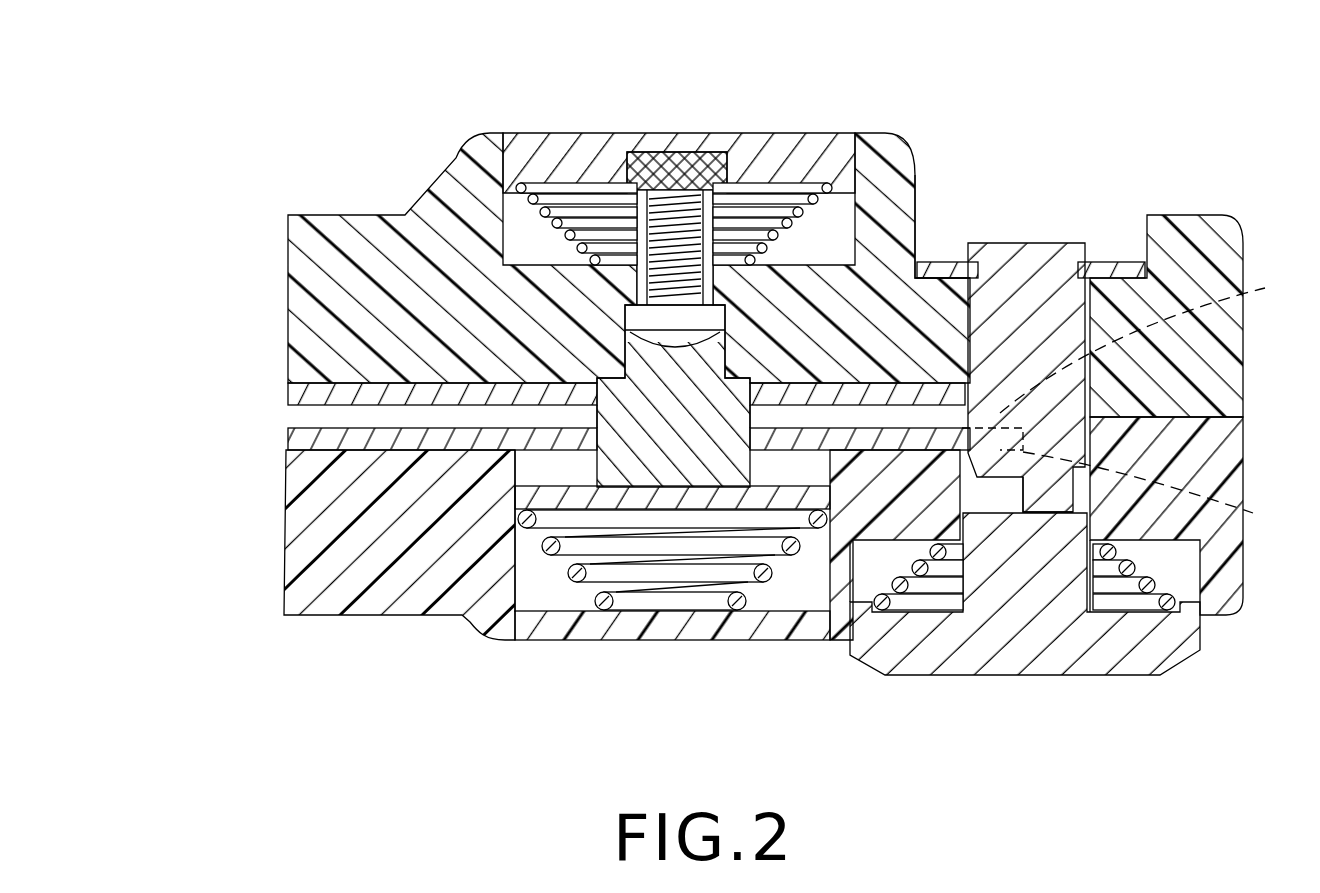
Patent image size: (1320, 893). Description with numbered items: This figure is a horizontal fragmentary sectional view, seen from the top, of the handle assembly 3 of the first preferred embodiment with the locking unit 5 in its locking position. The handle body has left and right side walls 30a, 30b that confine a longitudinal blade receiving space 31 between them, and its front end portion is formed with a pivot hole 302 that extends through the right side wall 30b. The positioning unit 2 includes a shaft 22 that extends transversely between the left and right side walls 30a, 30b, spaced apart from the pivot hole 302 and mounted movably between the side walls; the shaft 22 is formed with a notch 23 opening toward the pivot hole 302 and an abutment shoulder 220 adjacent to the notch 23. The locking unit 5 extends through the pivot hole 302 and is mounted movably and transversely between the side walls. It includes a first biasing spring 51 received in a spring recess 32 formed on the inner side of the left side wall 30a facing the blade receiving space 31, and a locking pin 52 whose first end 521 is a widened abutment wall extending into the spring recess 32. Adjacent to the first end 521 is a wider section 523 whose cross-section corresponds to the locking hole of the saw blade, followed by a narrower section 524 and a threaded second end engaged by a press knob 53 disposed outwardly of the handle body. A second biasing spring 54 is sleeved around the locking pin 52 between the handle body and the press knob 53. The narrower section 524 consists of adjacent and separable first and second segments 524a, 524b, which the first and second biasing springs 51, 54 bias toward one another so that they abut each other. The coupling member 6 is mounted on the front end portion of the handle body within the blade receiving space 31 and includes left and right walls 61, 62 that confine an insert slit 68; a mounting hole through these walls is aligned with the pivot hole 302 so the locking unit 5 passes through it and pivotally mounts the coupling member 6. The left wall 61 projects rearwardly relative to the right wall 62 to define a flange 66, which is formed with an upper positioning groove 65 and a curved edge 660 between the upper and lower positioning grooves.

The positioning unit 2 is at (1115, 508).
The handle assembly 3 is at (563, 405).
The locking unit 5 is at (631, 191).
The coupling member 6 is at (584, 467).
The shaft 22 is at (1050, 395).
The notch 23 is at (993, 502).
The left side wall 30a is at (397, 592).
The right side wall 30b is at (392, 243).
The blade receiving space 31 is at (360, 460).
The spring recess 32 is at (533, 600).
The first biasing spring 51 is at (740, 572).
The locking pin 52 is at (618, 337).
The press knob 53 is at (610, 143).
The second biasing spring 54 is at (631, 154).
The left wall 61 is at (347, 452).
The right wall 62 is at (305, 387).
The upper positioning groove 65 is at (1095, 503).
The flange 66 is at (1153, 343).
The insert slit 68 is at (400, 483).
The abutment shoulder 220 is at (1003, 480).
The pivot hole 302 is at (810, 272).
The first end 521 is at (663, 505).
The wider section 523 is at (650, 445).
The narrower section 524 is at (669, 382).
The first segment 524a is at (460, 160).
The second segment 524b is at (778, 258).
The curved edge 660 is at (1138, 481).